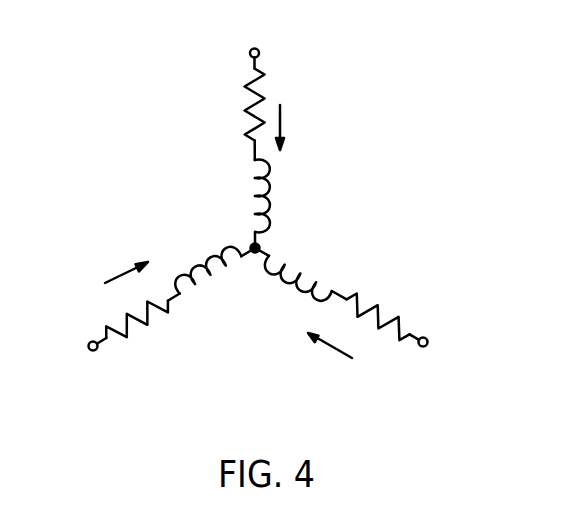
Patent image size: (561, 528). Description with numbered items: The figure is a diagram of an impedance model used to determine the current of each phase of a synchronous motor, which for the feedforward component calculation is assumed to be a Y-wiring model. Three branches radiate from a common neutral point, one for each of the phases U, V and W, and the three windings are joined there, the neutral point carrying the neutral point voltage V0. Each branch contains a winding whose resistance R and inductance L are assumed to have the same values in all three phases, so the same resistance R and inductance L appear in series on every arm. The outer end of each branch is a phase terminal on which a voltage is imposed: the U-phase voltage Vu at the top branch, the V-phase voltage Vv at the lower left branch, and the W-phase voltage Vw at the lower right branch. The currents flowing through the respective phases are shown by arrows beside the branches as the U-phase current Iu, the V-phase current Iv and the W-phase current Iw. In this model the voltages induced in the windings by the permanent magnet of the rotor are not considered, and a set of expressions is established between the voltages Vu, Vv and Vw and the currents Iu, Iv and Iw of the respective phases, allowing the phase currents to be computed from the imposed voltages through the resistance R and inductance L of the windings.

The resistance R is at (257, 213).
The inductance L is at (253, 230).
The U-phase voltage Vu is at (256, 41).
The V-phase voltage Vv is at (85, 356).
The W-phase voltage Vw is at (437, 350).
The neutral point voltage V0 is at (254, 264).
The U-phase current Iu is at (281, 113).
The V-phase current Iv is at (112, 281).
The W-phase current Iw is at (346, 357).